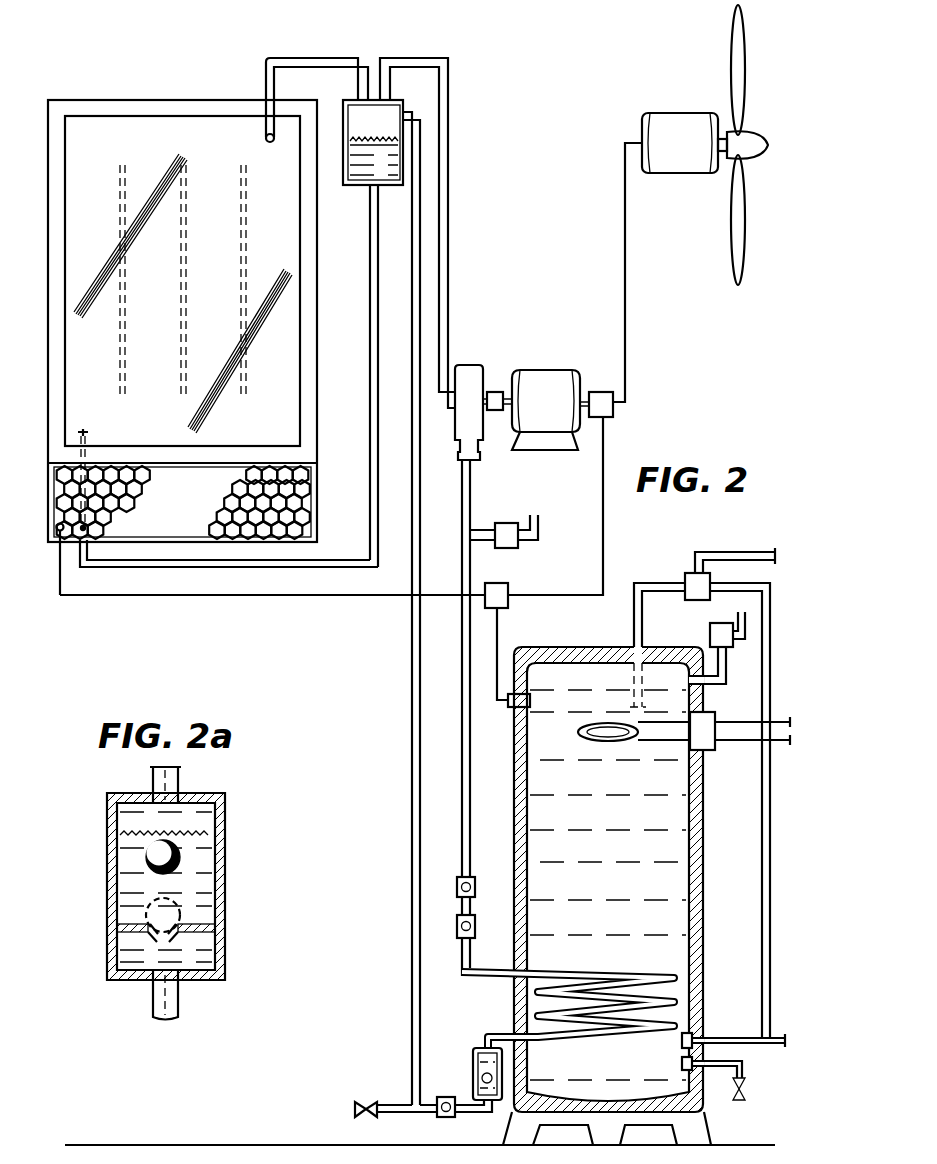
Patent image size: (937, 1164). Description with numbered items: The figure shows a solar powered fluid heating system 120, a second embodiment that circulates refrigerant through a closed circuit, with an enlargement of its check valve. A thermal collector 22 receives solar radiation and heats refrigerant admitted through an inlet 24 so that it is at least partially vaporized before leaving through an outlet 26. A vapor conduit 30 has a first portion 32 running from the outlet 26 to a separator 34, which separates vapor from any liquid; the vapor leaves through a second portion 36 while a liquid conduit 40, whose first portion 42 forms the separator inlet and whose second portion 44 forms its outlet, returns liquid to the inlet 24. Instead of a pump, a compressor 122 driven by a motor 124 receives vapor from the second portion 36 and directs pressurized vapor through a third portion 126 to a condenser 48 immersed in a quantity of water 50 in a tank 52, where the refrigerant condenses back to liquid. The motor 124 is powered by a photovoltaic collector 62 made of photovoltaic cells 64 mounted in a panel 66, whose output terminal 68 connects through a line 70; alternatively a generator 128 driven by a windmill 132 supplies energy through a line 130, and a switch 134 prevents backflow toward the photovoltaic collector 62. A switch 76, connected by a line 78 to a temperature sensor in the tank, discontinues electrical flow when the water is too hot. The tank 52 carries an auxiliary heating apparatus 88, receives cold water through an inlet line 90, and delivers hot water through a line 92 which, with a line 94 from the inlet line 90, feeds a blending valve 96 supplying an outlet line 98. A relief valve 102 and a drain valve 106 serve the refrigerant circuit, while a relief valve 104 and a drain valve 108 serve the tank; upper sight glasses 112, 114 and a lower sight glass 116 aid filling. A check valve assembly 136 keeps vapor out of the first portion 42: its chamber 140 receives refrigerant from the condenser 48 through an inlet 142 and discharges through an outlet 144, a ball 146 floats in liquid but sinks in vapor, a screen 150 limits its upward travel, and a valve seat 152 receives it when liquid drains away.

In FIG. 2, the thermal collector 22 is at (118, 100).
In FIG. 2, the inlet 24 is at (90, 431).
In FIG. 2, the outlet 26 is at (265, 139).
In FIG. 2, the vapor conduit 30 is at (449, 100).
In FIG. 2, the first portion of vapor conduit 32 is at (270, 58).
In FIG. 2, the separator 34 is at (395, 102).
In FIG. 2, the second portion of vapor conduit 36 is at (449, 298).
In FIG. 2, the liquid conduit 40 is at (424, 268).
In FIG. 2, the first portion of liquid conduit 42 is at (412, 296).
In FIG. 2, the second portion of liquid conduit 44 is at (370, 268).
In FIG. 2, the condenser 48 is at (614, 970).
In FIG. 2, the quantity of water 50 is at (628, 919).
In FIG. 2, the tank 52 is at (515, 790).
In FIG. 2, the photovoltaic collector 62 is at (205, 552).
In FIG. 2, the photovoltaic cells 64 is at (222, 520).
In FIG. 2, the panel 66 is at (166, 528).
In FIG. 2, the output terminal 68 is at (56, 530).
In FIG. 2, the line 70 is at (289, 597).
In FIG. 2, the switch 76 is at (509, 590).
In FIG. 2, the line 78 is at (498, 650).
In FIG. 2, the auxiliary heating apparatus 88 is at (598, 744).
In FIG. 2, the inlet line 90 is at (752, 1045).
In FIG. 2, the line 92 is at (634, 648).
In FIG. 2, the line 94 is at (762, 875).
In FIG. 2, the blending valve 96 is at (685, 586).
In FIG. 2, the outlet line 98 is at (738, 553).
In FIG. 2, the relief valve 102 is at (505, 523).
In FIG. 2, the relief valve 104 is at (710, 637).
In FIG. 2, the drain valve 106 is at (352, 1118).
In FIG. 2, the drain valve 108 is at (740, 1100).
In FIG. 2, the upper sight glass 112 is at (457, 884).
In FIG. 2, the upper sight glass 114 is at (457, 924).
In FIG. 2, the lower sight glass 116 is at (450, 1117).
In FIG. 2, the solar powered fluid heating system 120 is at (490, 185).
In FIG. 2, the compressor 122 is at (470, 365).
In FIG. 2, the motor 124 is at (545, 372).
In FIG. 2, the third portion of vapor conduit 126 is at (462, 790).
In FIG. 2, the generator 128 is at (672, 114).
In FIG. 2, the line 130 is at (625, 243).
In FIG. 2, the windmill 132 is at (735, 36).
In FIG. 2, the switch 134 is at (614, 406).
In FIG. 2, the check valve assembly 136 is at (470, 1068).
In FIG. 2a, the check valve assembly 136 is at (161, 889).
In FIG. 2a, the chamber 140 is at (220, 872).
In FIG. 2a, the inlet 142 is at (180, 800).
In FIG. 2a, the outlet 144 is at (150, 990).
In FIG. 2a, the ball 146 is at (150, 860).
In FIG. 2a, the screen 150 is at (208, 838).
In FIG. 2a, the valve seat 152 is at (185, 944).